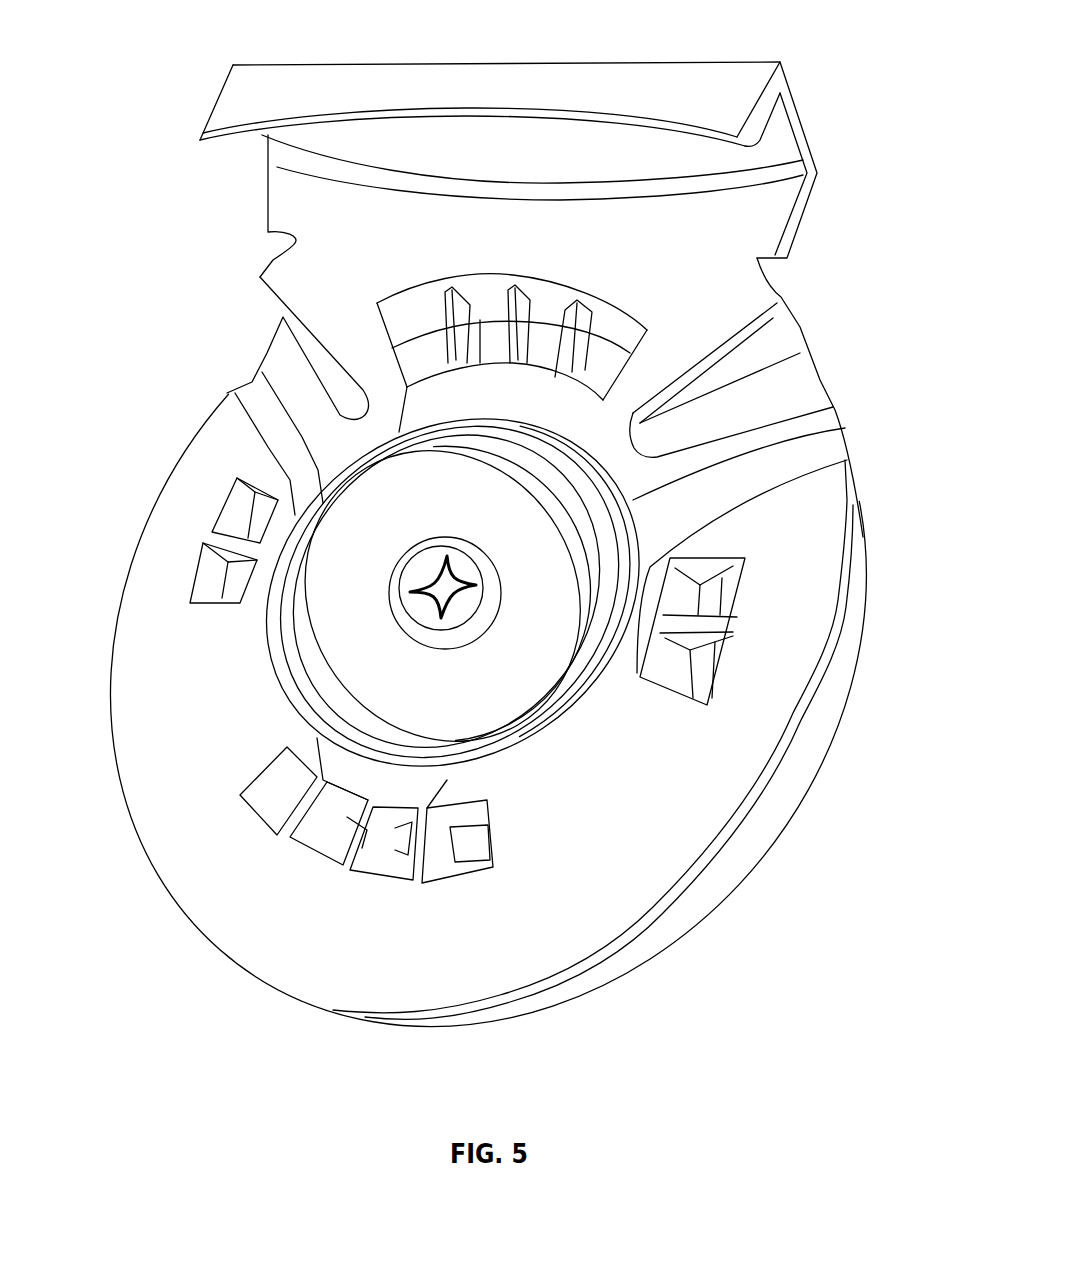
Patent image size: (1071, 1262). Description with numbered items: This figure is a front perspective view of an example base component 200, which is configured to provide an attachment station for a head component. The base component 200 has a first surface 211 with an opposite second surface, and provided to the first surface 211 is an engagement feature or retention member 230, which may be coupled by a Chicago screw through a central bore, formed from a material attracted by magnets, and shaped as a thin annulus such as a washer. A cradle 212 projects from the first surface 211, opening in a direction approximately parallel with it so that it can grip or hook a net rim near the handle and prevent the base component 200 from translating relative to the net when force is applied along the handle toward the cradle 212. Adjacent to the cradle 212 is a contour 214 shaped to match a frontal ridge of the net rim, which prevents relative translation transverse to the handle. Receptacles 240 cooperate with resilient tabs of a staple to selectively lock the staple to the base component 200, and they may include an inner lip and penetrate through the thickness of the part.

The base component 200 is at (198, 105).
The cradle 212 is at (224, 169).
The contour 214 is at (251, 349).
The first surface 211 is at (230, 927).
The retention member 230 is at (520, 661).
The receptacles 240 is at (197, 560).